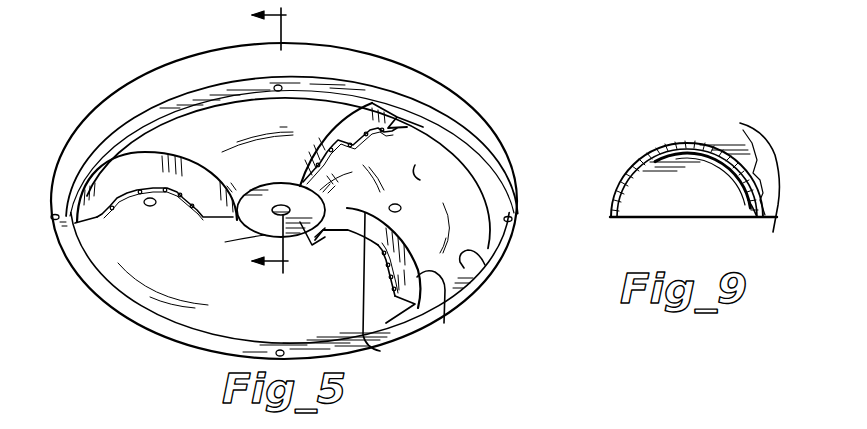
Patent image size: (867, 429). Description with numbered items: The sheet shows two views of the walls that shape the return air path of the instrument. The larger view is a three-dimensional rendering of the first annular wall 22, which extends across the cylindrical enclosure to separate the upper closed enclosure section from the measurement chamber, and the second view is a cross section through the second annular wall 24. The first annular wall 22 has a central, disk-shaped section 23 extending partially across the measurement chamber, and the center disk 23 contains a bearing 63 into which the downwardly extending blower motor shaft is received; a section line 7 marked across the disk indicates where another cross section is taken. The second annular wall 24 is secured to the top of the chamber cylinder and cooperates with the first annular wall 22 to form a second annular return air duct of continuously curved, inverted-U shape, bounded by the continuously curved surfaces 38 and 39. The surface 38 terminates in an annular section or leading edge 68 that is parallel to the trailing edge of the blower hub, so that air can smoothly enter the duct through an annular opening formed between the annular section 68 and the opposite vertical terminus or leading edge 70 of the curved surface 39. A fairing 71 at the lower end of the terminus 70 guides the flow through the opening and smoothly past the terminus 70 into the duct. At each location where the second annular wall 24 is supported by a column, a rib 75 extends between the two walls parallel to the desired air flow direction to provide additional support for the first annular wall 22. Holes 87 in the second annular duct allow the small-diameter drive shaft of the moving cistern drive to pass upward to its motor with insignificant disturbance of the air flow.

In FIG. 5, the first annular wall 22 is at (356, 63).
In FIG. 5, the section line 7- 7 is at (254, 141).
In FIG. 5, the central disk-shaped section 23 is at (262, 218).
In FIG. 5, the bearing 63 is at (318, 262).
In FIG. 5, the rib 75 is at (133, 172).
In FIG. 5, the holes 87 is at (144, 200).
In FIG. 5, the continuously curved surface 38 is at (415, 178).
In FIG. 5, the annular section or leading edge 68 is at (485, 265).
In FIG. 9, the second annular wall 24 is at (618, 185).
In FIG. 9, the continuously curved surface 39 is at (656, 143).
In FIG. 9, the vertical terminus or leading edge 70 is at (748, 131).
In FIG. 9, the fairing 71 is at (757, 218).